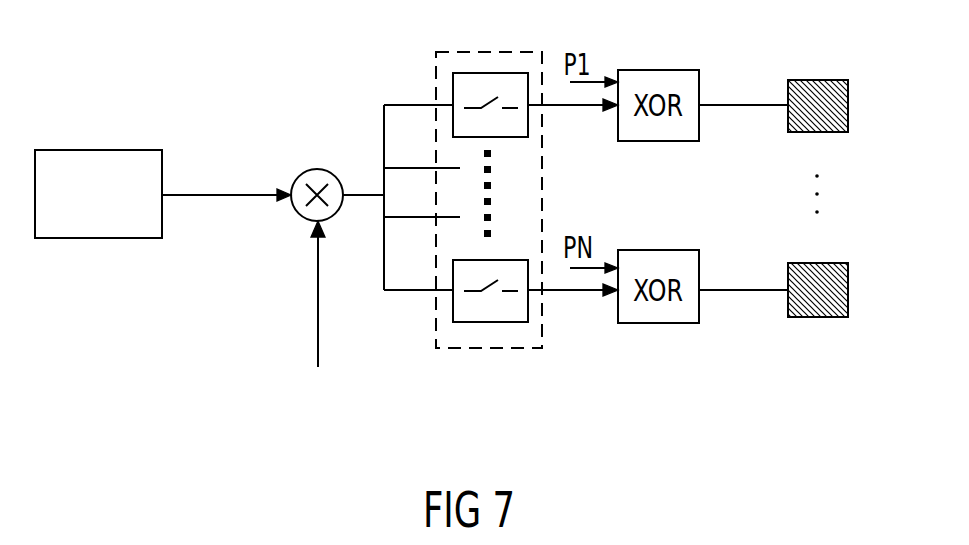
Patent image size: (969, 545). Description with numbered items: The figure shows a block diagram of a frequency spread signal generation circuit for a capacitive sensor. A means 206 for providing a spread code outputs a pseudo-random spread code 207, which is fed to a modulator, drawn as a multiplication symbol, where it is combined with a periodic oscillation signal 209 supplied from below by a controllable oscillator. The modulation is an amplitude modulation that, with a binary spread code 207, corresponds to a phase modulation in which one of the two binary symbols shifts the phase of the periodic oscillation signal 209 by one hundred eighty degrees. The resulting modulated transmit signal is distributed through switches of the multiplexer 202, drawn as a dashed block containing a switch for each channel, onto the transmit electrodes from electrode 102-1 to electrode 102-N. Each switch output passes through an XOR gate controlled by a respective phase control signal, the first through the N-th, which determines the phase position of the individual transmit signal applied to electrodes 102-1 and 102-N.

The means for providing a spread code 206 is at (82, 150).
The spread code 207 is at (212, 195).
The periodic oscillation signal 209 is at (316, 292).
The multiplexer 202 is at (505, 349).
The electrode 102-1 is at (830, 80).
The electrode 102-N is at (830, 263).